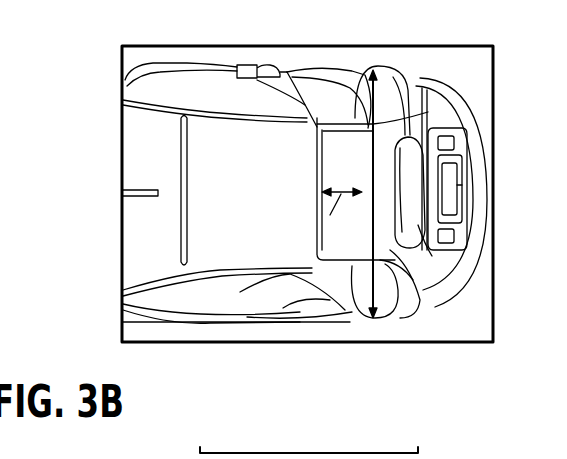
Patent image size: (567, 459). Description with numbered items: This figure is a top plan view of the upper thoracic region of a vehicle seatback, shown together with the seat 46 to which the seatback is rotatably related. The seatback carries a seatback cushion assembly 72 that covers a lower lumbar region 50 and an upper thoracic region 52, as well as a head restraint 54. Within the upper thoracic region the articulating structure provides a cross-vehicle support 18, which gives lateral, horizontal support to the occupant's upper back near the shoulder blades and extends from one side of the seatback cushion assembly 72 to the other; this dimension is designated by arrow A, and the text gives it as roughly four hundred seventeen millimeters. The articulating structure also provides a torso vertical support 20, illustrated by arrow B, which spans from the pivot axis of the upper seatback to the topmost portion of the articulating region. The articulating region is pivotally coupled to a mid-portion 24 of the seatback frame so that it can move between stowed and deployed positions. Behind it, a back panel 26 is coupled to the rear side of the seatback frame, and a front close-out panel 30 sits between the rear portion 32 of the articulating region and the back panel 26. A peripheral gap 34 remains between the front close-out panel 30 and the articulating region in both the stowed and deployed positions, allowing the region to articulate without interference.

The cross-vehicle support 18 is at (392, 74).
The torso vertical support 20 is at (438, 120).
The mid-portion 24 is at (338, 82).
The back panel 26 is at (457, 262).
The front close-out panel 30 is at (420, 90).
The rear portion 32 is at (425, 92).
The peripheral gap 34 is at (0, 189).
The seat 46 is at (148, 88).
The lower lumbar region 50 is at (352, 228).
The upper thoracic region 52 is at (402, 115).
The head restraint 54 is at (423, 272).
The seatback cushion assembly 72 is at (415, 283).
The arrow A is at (378, 322).
The arrow B is at (341, 194).